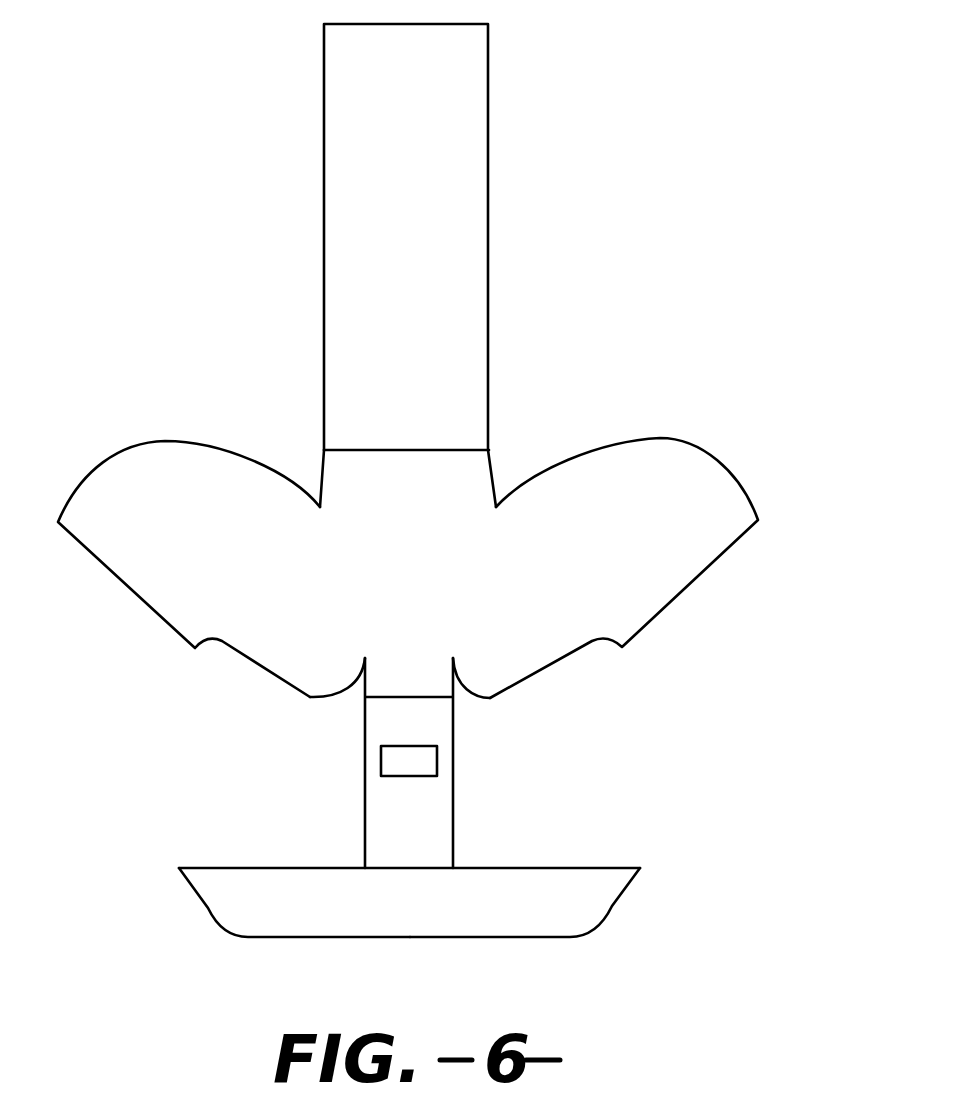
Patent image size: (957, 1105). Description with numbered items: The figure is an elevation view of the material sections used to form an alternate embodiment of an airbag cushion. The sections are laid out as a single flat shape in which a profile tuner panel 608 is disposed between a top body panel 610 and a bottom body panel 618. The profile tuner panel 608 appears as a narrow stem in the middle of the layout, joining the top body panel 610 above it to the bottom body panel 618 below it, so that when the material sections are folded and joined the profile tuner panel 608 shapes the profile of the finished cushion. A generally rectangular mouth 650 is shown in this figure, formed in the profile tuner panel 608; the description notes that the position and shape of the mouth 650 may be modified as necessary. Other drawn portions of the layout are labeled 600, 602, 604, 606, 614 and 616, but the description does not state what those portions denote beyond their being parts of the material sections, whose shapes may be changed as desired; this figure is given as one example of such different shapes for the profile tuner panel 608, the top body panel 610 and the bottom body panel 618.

The shaft 600 is at (463, 157).
The joint line 602 is at (445, 475).
The right wing 604 is at (678, 468).
The left wing 606 is at (157, 462).
The profile tuner panel 608 is at (440, 816).
The top body panel 610 is at (309, 702).
The base right portion 614 is at (590, 896).
The base left portion 616 is at (230, 898).
The bottom body panel 618 is at (237, 867).
The generally rectangular mouth 650 is at (440, 759).